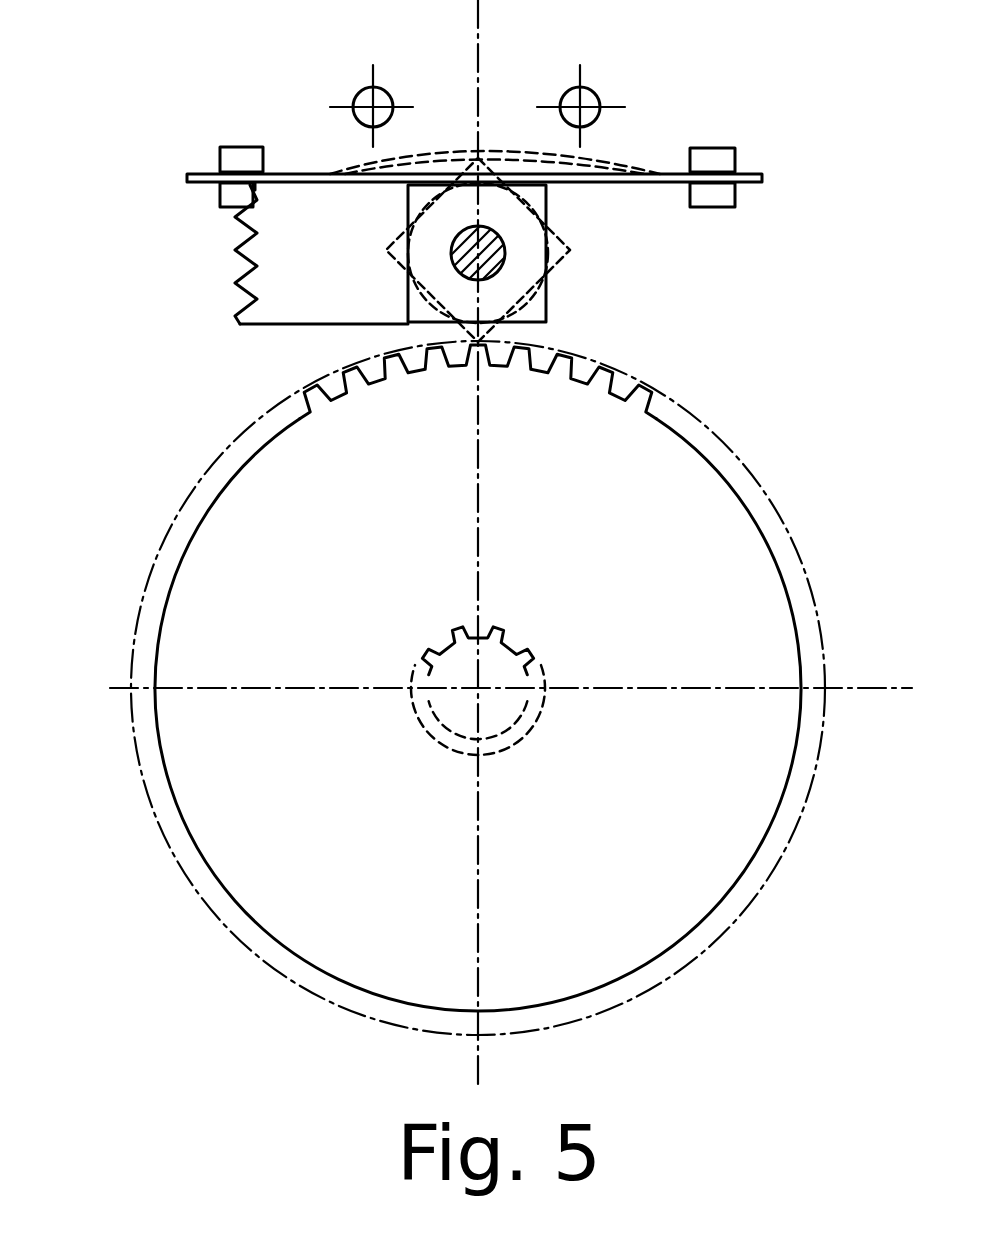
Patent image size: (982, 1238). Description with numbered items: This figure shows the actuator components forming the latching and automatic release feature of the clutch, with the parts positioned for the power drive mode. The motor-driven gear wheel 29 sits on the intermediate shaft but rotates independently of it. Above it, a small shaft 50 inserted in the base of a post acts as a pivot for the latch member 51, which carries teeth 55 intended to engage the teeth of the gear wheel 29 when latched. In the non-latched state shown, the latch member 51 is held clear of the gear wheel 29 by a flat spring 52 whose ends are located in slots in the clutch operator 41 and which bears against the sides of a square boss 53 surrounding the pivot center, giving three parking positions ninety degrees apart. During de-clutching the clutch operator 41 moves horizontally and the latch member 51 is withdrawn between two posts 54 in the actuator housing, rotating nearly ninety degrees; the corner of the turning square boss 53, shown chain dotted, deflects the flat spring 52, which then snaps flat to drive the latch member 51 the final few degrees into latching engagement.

The gear wheel 29 is at (290, 458).
The clutch operator 41 is at (247, 153).
The small shaft 50 is at (505, 235).
The latch member 51 is at (277, 307).
The flat spring 52 is at (330, 174).
The square boss 53 is at (517, 277).
The posts 54 is at (380, 95).
The teeth 55 is at (237, 223).